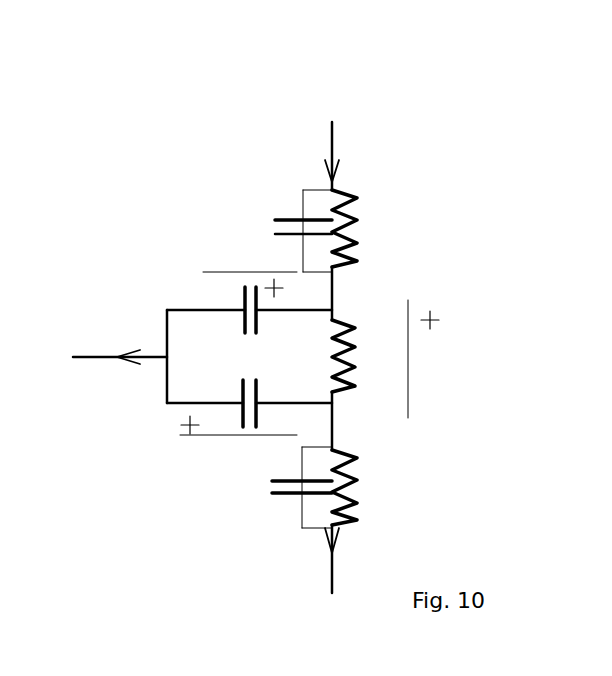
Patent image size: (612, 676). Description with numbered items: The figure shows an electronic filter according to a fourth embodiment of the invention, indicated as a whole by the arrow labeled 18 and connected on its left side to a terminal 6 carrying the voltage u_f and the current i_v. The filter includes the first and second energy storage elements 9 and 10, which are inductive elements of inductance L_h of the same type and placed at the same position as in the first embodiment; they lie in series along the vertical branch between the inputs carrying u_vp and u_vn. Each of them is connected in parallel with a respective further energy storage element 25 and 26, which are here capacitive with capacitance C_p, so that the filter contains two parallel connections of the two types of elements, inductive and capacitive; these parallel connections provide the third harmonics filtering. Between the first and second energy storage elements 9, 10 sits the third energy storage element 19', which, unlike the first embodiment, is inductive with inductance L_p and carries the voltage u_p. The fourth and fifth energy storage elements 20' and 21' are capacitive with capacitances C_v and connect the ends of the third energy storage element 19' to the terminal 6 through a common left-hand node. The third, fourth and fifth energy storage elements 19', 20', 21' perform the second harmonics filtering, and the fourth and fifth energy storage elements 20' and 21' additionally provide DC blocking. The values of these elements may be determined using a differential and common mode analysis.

The filter circuit 18 is at (206, 123).
The first energy storage element 9 is at (412, 194).
The further energy storage element 25 is at (286, 204).
The third energy storage element 19' is at (391, 299).
The fourth energy storage element 20' is at (202, 274).
The fifth energy storage element 21' is at (178, 414).
The filter output terminal 6 is at (104, 342).
The second energy storage element 10 is at (391, 473).
The further energy storage element 26 is at (276, 510).